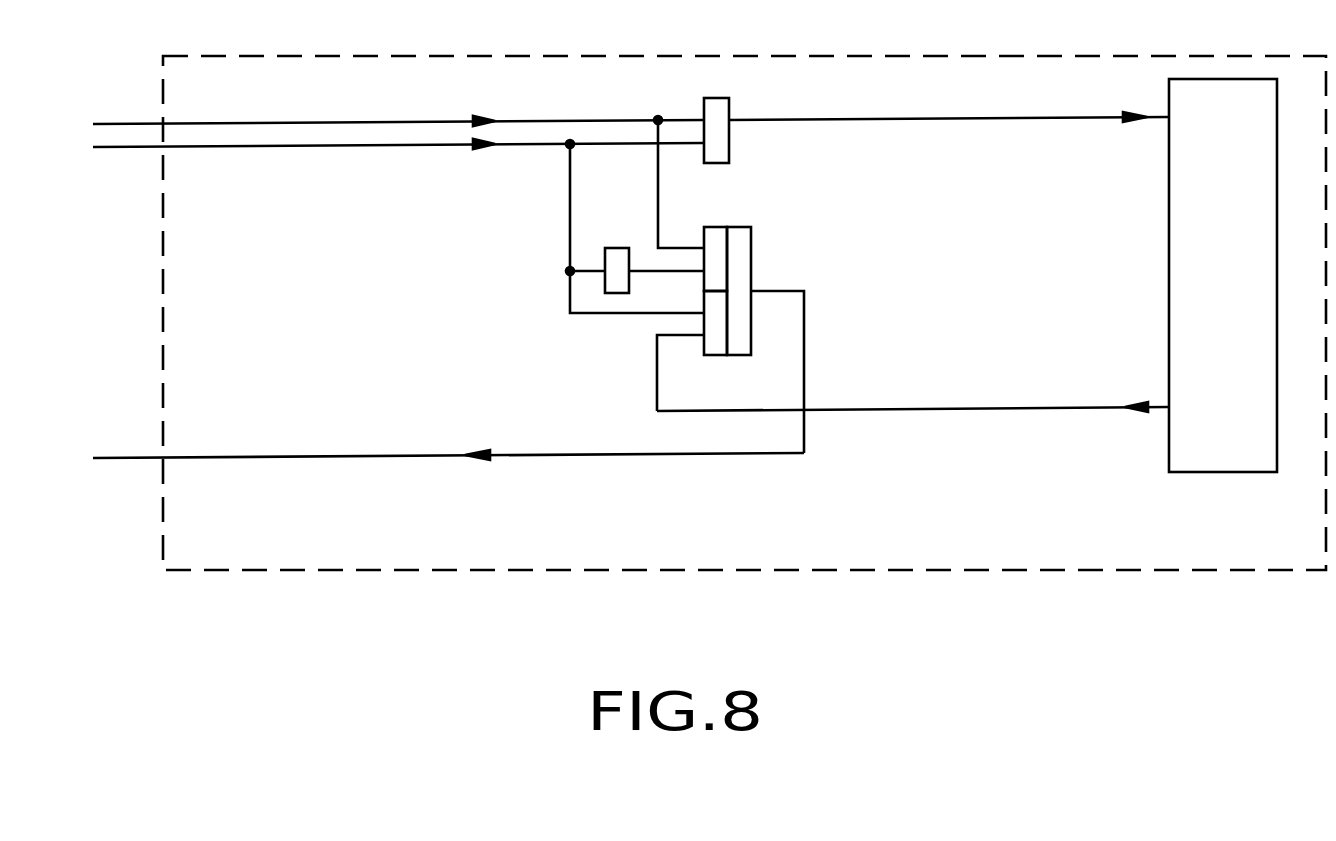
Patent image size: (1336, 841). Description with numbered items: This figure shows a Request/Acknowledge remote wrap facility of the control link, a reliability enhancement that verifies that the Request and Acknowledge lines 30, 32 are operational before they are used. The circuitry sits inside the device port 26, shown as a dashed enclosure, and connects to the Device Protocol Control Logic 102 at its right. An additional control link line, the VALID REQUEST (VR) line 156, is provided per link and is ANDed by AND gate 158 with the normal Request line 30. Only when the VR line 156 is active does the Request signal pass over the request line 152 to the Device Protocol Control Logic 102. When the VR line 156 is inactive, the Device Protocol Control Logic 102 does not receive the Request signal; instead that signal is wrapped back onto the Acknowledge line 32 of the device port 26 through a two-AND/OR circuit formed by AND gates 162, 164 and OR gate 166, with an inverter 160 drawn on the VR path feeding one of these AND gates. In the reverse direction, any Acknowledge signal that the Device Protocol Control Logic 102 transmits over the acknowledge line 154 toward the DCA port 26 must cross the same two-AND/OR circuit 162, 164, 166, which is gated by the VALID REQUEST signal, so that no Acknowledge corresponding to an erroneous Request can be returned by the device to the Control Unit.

The device port 26 is at (400, 573).
The Request line 30 is at (397, 120).
The Acknowledge line 32 is at (395, 453).
The Device Protocol Control Logic 102 is at (1192, 472).
The request line to block 102 152 is at (995, 118).
The acknowledge line from block 102 154 is at (993, 405).
The VALID REQUEST line 156 is at (397, 145).
The AND gate 158 is at (732, 156).
The inverter (NOT gate) 160 is at (612, 247).
The AND gate of two-AND/OR circuit 162 is at (714, 227).
The AND gate of two-AND/OR circuit 164 is at (717, 358).
The OR gate of two-AND/OR circuit 166 is at (753, 260).